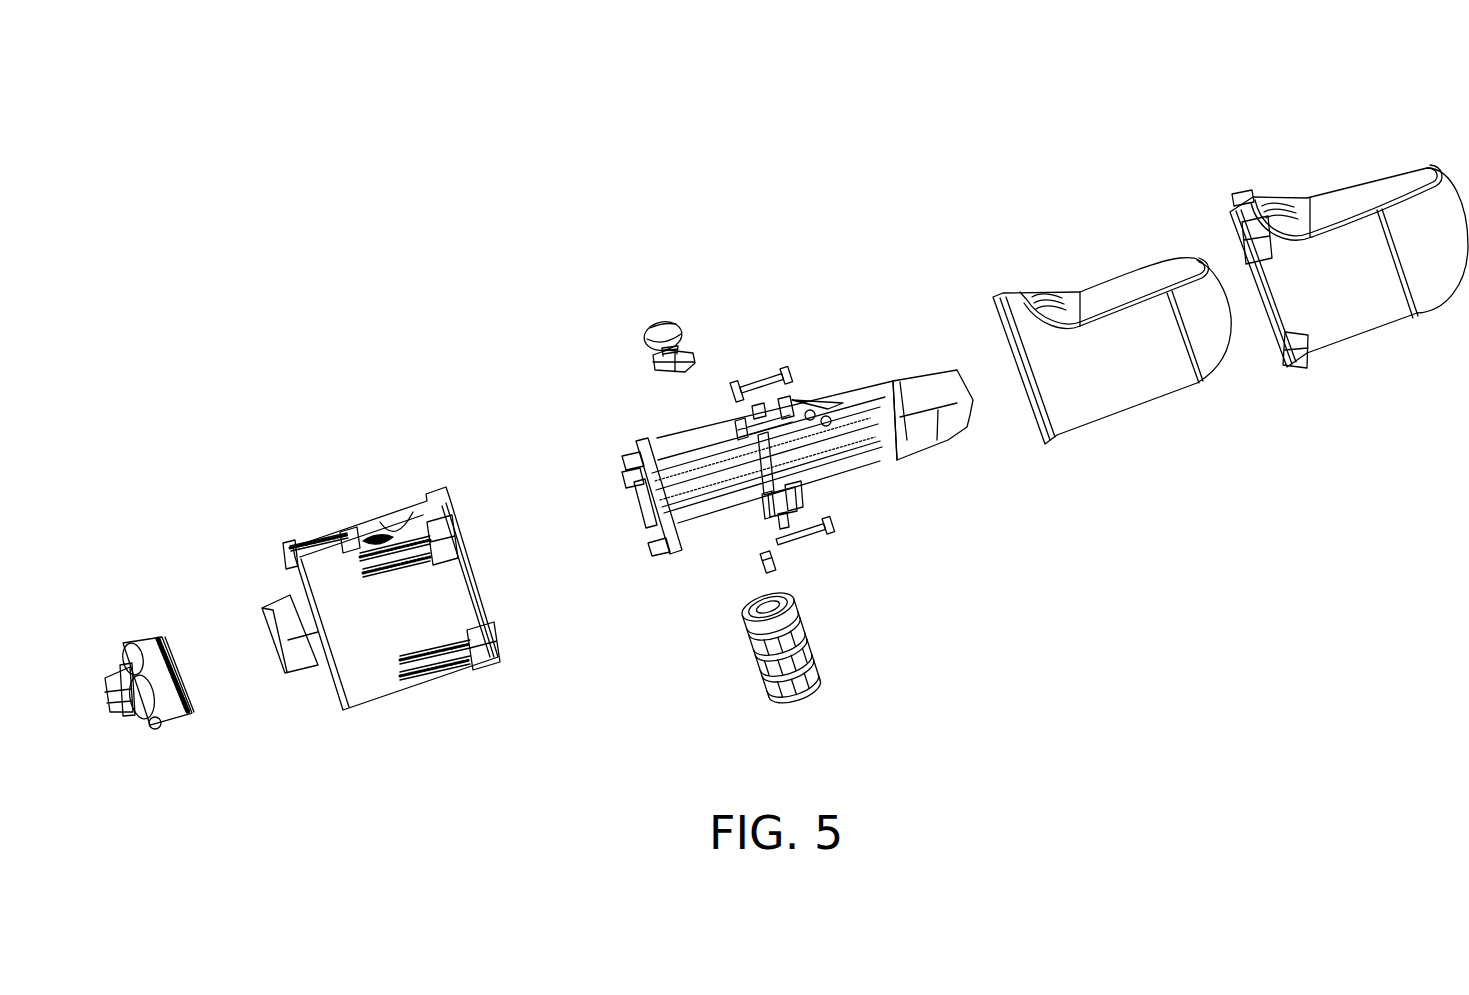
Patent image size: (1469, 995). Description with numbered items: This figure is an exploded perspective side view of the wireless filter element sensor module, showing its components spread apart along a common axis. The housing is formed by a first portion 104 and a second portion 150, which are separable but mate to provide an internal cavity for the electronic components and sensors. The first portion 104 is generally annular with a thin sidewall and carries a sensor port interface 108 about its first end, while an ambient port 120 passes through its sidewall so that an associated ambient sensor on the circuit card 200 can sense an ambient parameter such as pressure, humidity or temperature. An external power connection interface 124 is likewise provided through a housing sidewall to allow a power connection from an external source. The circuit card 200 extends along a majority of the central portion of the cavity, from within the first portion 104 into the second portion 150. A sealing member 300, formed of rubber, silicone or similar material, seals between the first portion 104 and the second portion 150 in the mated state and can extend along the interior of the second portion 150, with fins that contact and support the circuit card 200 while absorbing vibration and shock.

The first portion 104 is at (335, 570).
The sensor port interface 108 is at (158, 653).
The ambient port 120 is at (647, 333).
The external power connection interface 124 is at (812, 650).
The second portion 150 is at (1326, 207).
The circuit card 200 is at (847, 400).
The sealing member 300 is at (1103, 290).